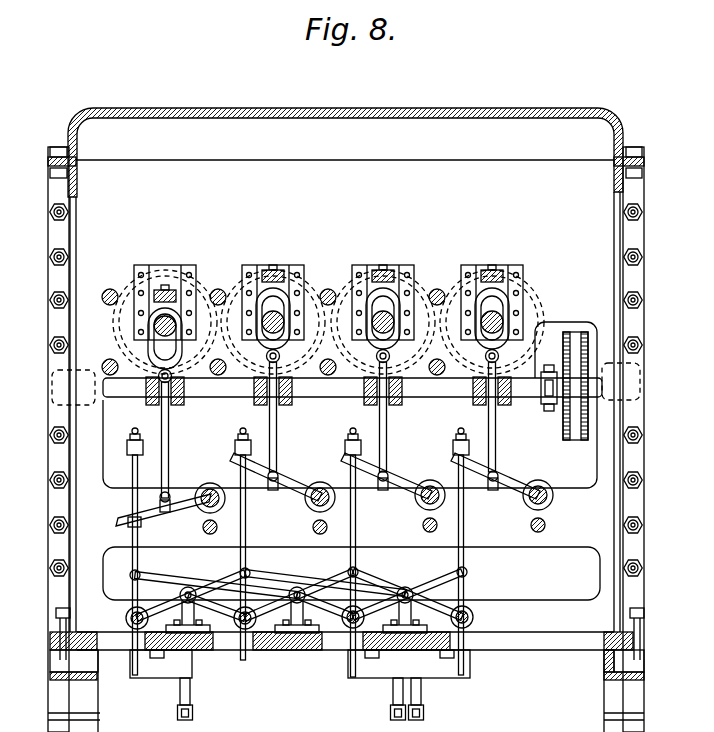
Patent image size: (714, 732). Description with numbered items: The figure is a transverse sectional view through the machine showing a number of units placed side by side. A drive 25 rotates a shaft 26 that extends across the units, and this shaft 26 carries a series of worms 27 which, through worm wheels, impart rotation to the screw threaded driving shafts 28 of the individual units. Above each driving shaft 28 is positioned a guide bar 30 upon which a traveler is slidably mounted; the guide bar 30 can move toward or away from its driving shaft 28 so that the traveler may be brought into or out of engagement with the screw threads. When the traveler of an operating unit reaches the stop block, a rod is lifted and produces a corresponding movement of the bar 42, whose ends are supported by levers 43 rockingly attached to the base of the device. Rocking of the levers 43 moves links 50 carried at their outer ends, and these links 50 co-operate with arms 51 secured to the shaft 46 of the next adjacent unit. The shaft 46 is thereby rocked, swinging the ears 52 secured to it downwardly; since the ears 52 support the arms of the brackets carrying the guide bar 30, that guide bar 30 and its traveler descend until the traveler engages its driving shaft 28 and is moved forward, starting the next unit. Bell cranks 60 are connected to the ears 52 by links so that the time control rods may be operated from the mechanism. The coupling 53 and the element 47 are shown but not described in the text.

The drive 25 is at (577, 332).
The shaft 26 is at (341, 396).
The worms 27 is at (478, 396).
The screw threaded driving shaft 28 is at (500, 318).
The guide bar 30 is at (500, 268).
The bar 42 is at (474, 617).
The levers 43 is at (446, 583).
The shaft 46 is at (546, 488).
The stop stud 47 is at (546, 525).
The links 50 is at (465, 537).
The arms 51 is at (516, 478).
The ears 52 is at (507, 478).
The coupling 53 is at (546, 384).
The bell cranks 60 is at (423, 695).